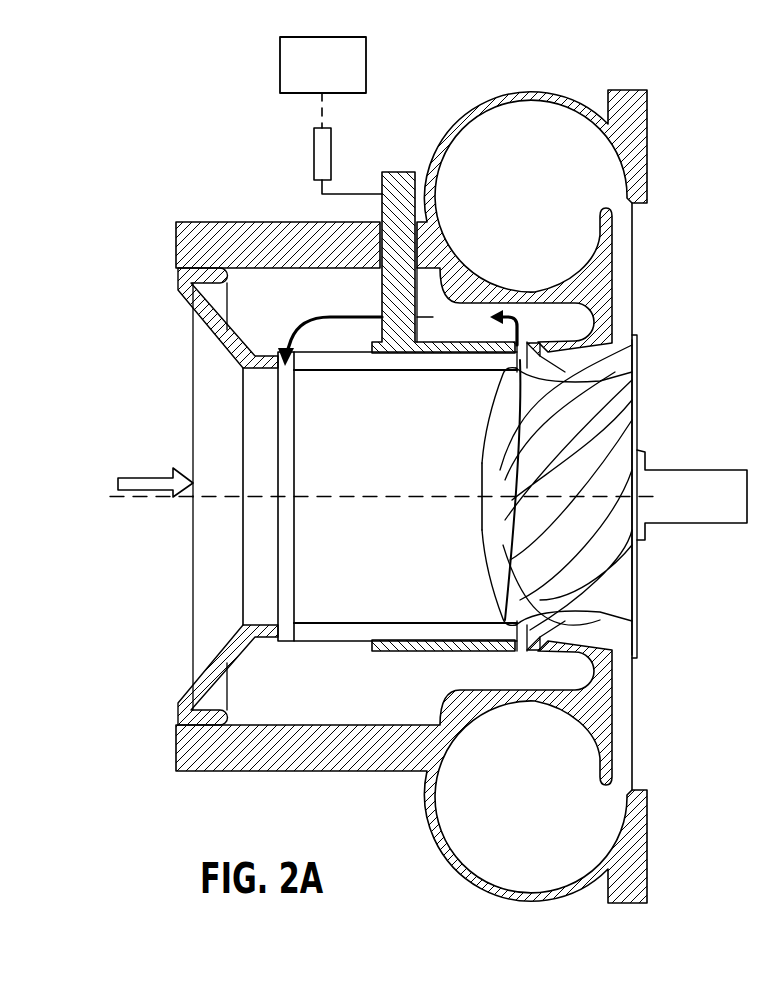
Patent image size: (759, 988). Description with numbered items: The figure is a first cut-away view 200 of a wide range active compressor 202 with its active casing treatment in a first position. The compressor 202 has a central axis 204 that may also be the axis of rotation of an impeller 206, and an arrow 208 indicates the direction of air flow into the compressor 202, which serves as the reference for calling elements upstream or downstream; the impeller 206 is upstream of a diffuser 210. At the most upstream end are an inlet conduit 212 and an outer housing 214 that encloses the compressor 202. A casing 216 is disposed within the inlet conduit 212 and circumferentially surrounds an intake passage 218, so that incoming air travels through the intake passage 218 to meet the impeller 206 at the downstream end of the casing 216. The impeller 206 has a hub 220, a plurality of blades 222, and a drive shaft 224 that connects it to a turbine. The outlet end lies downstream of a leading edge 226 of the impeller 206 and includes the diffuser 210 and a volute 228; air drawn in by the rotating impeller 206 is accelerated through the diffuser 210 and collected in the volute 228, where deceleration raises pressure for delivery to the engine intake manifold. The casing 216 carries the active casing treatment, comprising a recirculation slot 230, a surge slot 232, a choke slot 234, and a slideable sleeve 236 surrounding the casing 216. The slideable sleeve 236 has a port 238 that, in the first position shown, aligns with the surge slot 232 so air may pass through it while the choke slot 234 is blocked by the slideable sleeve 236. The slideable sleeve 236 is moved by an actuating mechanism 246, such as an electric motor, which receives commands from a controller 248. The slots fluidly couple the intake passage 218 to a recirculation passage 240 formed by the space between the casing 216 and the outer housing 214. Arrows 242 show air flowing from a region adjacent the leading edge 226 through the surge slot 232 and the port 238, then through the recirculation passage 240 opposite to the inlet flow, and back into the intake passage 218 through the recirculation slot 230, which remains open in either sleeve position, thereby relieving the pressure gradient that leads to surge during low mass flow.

The first cut-away view 200 is at (146, 148).
The wide range active compressor 202 is at (253, 148).
The central axis 204 is at (181, 498).
The impeller 206 is at (466, 493).
The arrow 208 is at (130, 478).
The diffuser 210 is at (624, 283).
The inlet conduit 212 is at (150, 374).
The outer housing 214 is at (201, 230).
The casing 216 is at (341, 364).
The intake passage 218 is at (315, 511).
The hub 220 is at (490, 473).
The blades 222 is at (545, 582).
The drive shaft 224 is at (724, 470).
The leading edge 226 is at (513, 425).
The volute 228 is at (462, 152).
The recirculation slot 230 is at (288, 648).
The surge slot 232 is at (512, 655).
The choke slot 234 is at (541, 652).
The slideable sleeve 236 is at (394, 172).
The port 238 is at (505, 341).
The recirculation passage 240 is at (315, 268).
The arrows 242 is at (320, 317).
The actuating mechanism 246 is at (315, 150).
The controller 248 is at (340, 78).